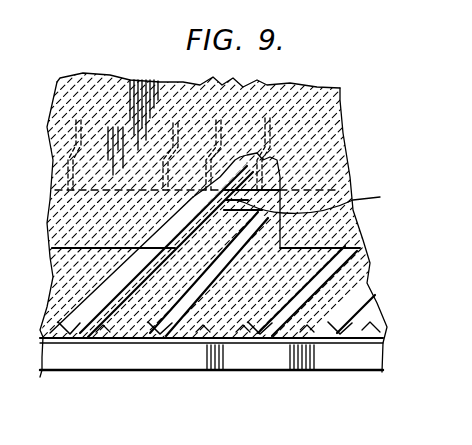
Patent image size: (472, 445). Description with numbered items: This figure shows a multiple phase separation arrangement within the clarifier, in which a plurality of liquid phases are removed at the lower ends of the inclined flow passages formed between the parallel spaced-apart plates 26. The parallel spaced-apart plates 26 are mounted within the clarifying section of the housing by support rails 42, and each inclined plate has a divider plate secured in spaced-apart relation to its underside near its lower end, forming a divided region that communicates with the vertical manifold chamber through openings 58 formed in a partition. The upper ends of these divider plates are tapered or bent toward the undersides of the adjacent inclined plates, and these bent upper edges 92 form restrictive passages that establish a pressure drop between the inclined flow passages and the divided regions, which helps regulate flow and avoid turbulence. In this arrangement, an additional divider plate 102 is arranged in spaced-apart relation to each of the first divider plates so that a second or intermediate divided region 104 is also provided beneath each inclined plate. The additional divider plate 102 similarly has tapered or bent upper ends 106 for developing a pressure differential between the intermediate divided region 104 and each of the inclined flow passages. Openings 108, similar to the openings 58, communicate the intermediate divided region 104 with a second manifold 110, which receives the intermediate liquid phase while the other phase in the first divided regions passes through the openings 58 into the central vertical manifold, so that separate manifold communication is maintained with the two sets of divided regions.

The parallel spaced-apart plates 26 is at (183, 78).
The support rails 42 is at (337, 380).
The openings 58 is at (105, 290).
The bent upper edges 92 is at (180, 136).
The additional divider plate 102 is at (128, 340).
The intermediate divided region 104 is at (74, 160).
The bent upper ends 106 is at (222, 152).
The openings 108 is at (46, 222).
The second manifold 110 is at (350, 230).